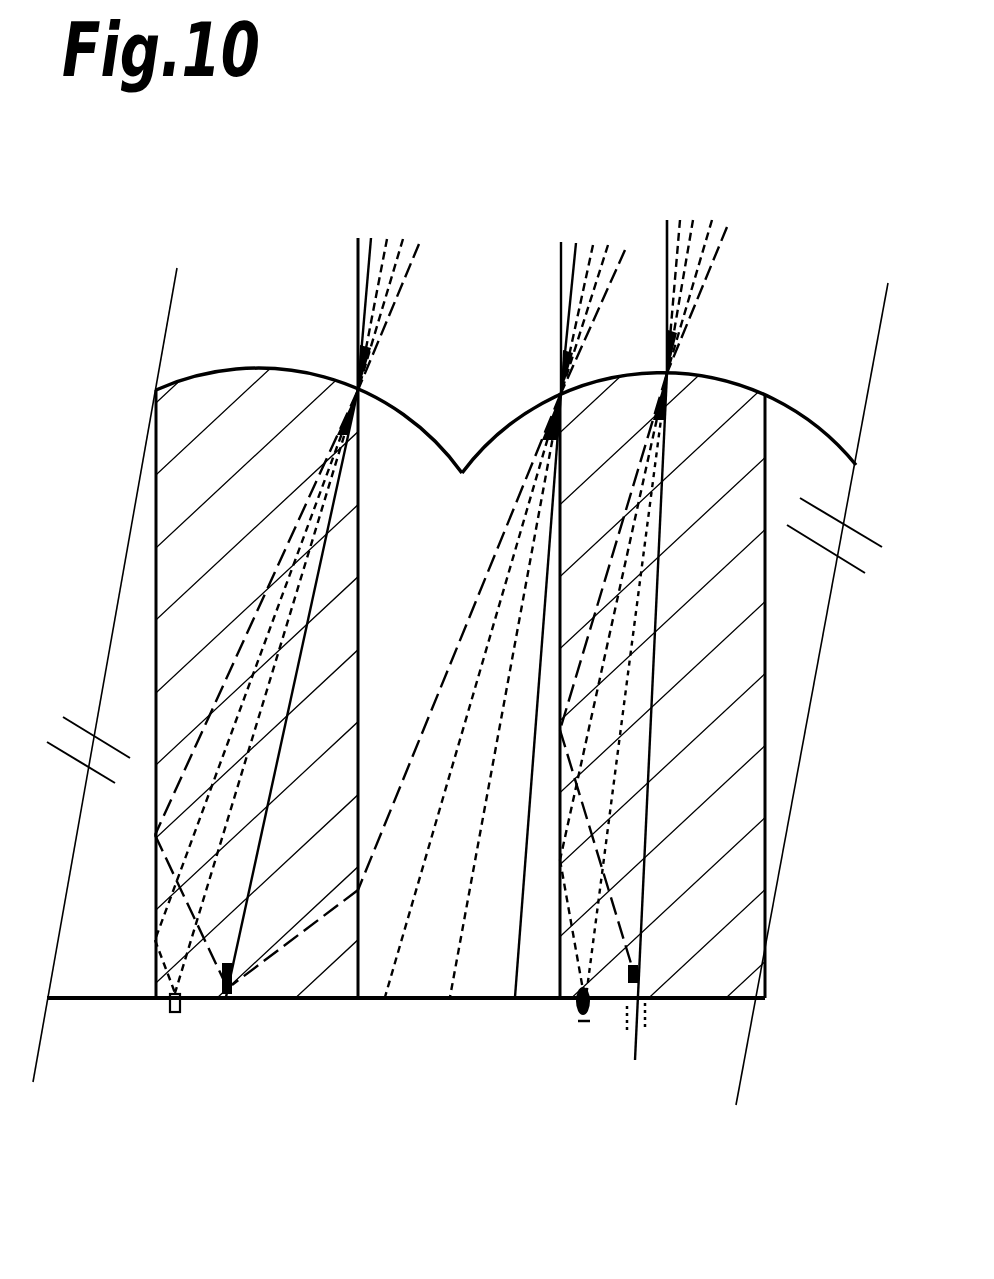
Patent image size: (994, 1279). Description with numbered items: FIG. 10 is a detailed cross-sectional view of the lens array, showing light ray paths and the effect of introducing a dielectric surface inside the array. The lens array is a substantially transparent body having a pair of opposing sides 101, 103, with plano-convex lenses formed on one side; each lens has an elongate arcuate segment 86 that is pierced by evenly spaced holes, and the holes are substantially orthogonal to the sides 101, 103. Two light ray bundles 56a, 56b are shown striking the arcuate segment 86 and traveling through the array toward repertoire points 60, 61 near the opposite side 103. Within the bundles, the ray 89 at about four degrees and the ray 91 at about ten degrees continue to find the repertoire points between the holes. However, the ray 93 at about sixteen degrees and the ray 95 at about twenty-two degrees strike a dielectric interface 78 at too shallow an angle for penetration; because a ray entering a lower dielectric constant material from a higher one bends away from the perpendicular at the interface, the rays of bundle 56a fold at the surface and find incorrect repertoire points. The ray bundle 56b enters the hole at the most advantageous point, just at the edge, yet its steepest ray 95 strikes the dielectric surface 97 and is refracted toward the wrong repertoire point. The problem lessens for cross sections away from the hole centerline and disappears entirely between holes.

The light ray bundle 56a is at (355, 387).
The light ray bundle 56b is at (560, 391).
The repertoire point 60 is at (635, 1040).
The photodetector 61 is at (650, 1033).
The dielectric interface 78 is at (158, 507).
The elongate arcuate segment 86 is at (215, 371).
The 4.20° ray 89 is at (680, 218).
The 10.26° ray 91 is at (694, 218).
The 16.16° ray 93 is at (713, 220).
The 22.20° ray 95 is at (752, 288).
The dielectric surface 97 is at (360, 478).
The side of the body of transparent material 101 is at (806, 404).
The side of the body of transparent material 103 is at (95, 1030).